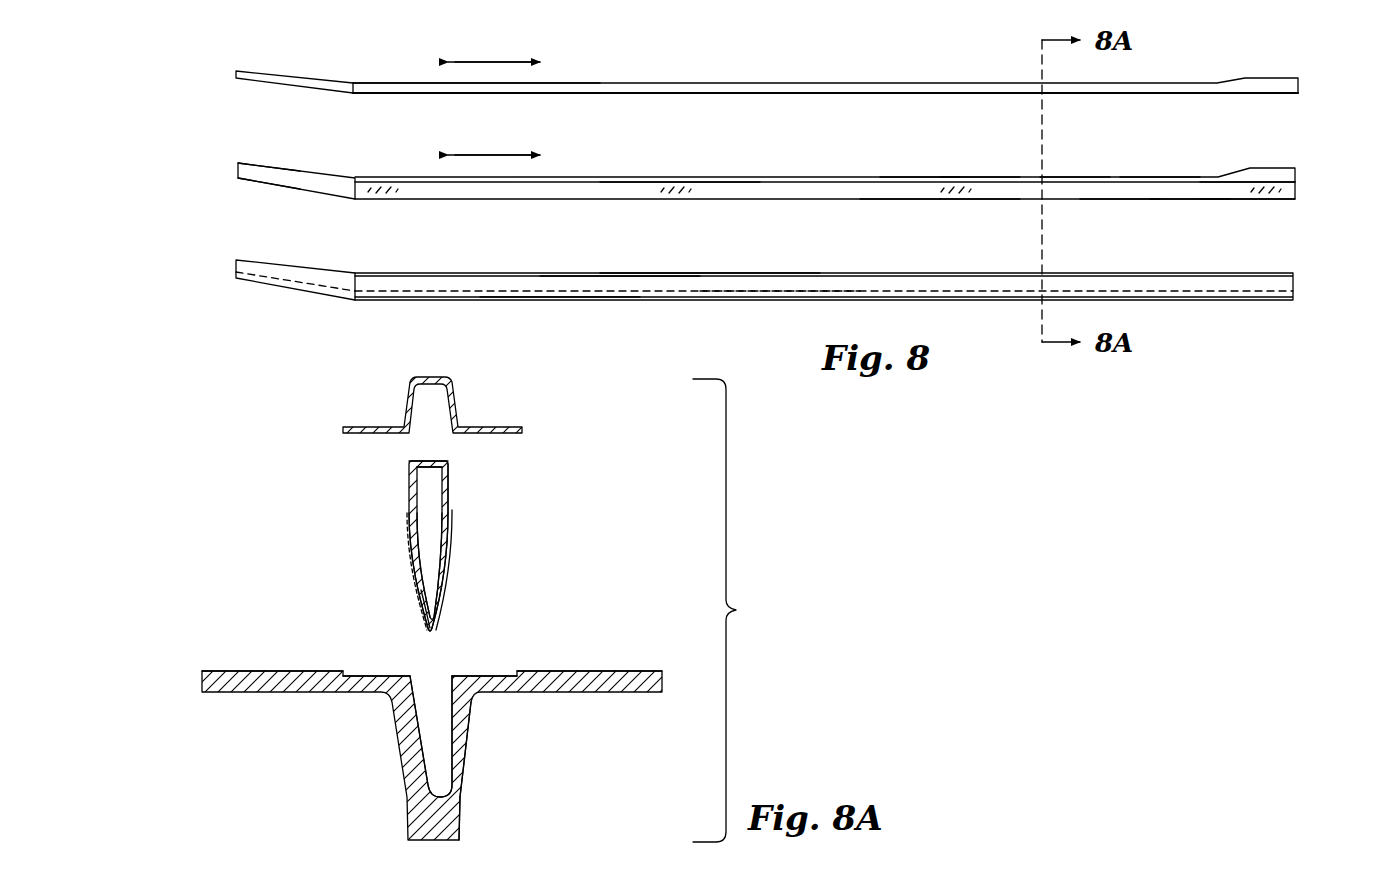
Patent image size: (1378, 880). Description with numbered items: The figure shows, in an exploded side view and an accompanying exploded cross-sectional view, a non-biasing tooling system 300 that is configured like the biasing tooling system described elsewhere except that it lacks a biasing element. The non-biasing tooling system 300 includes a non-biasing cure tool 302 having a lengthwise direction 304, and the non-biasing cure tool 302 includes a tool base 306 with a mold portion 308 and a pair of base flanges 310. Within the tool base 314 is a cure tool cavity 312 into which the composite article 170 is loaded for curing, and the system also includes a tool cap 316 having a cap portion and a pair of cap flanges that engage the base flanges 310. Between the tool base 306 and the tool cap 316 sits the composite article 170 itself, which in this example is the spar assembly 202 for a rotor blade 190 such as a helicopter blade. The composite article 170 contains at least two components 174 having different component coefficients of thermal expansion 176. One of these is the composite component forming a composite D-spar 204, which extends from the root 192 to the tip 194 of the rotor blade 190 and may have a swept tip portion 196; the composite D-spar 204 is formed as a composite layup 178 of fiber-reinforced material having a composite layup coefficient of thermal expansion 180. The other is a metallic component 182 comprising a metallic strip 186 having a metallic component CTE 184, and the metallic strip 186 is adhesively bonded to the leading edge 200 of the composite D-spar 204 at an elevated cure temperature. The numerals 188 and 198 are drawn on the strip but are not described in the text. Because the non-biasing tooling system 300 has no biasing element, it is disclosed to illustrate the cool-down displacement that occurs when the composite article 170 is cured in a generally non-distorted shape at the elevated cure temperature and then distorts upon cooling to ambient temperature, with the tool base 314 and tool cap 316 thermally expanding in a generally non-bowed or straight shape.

In FIG. 8, the non-biasing tooling system 300 is at (405, 50).
In FIG. 8A, the non-biasing tooling system 300 is at (660, 672).
In FIG. 8, the non-biasing cure tool 302 is at (1293, 285).
In FIG. 8A, the non-biasing cure tool 302 is at (632, 694).
In FIG. 8, the lengthwise direction 304 is at (490, 62).
In FIG. 8, the tool base 306 is at (553, 297).
In FIG. 8A, the tool base 306 is at (475, 740).
In FIG. 8, the mold portion 308 is at (609, 277).
In FIG. 8A, the mold portion 308 is at (473, 765).
In FIG. 8, the base flanges 310 is at (704, 273).
In FIG. 8A, the base flanges 310 is at (235, 670).
In FIG. 8, the cure tool cavity 312 is at (785, 268).
In FIG. 8A, the cure tool cavity 312 is at (435, 745).
In FIG. 8A, the tool base 314 is at (352, 675).
In FIG. 8, the tool cap 316 is at (757, 85).
In FIG. 8A, the tool cap 316 is at (432, 377).
In FIG. 8, the composite article 170 is at (1272, 168).
In FIG. 8A, the composite article 170 is at (428, 546).
In FIG. 8, the components 174 is at (637, 177).
In FIG. 8A, the components 174 is at (410, 540).
In FIG. 8, the component coefficients of thermal expansion 176 is at (707, 181).
In FIG. 8A, the component coefficients of thermal expansion 176 is at (412, 565).
In FIG. 8, the composite layup 178 is at (918, 177).
In FIG. 8A, the composite layup 178 is at (445, 466).
In FIG. 8, the composite layup coefficient of thermal expansion 180 is at (975, 177).
In FIG. 8A, the composite layup coefficient of thermal expansion 180 is at (445, 500).
In FIG. 8, the metallic component 182 is at (903, 192).
In FIG. 8A, the metallic component 182 is at (450, 535).
In FIG. 8, the metallic component CTE 184 is at (975, 192).
In FIG. 8A, the metallic component CTE 184 is at (448, 565).
In FIG. 8, the metallic strip 186 is at (1118, 193).
In FIG. 8A, the metallic strip 186 is at (447, 592).
In FIG. 8, the ring 188 is at (1178, 192).
In FIG. 8A, the ring 188 is at (409, 512).
In FIG. 8A, the rotor blade 190 is at (420, 600).
In FIG. 8, the root 192 is at (1295, 182).
In FIG. 8, the tip 194 is at (238, 168).
In FIG. 8, the swept tip portion 196 is at (262, 186).
In FIG. 8, the direction of movement 198 is at (490, 155).
In FIG. 8, the leading edge 200 is at (1265, 197).
In FIG. 8A, the leading edge 200 is at (440, 630).
In FIG. 8, the spar assembly 202 is at (1157, 177).
In FIG. 8, the composite D-spar 204 is at (1070, 177).
In FIG. 8A, the composite D-spar 204 is at (407, 466).